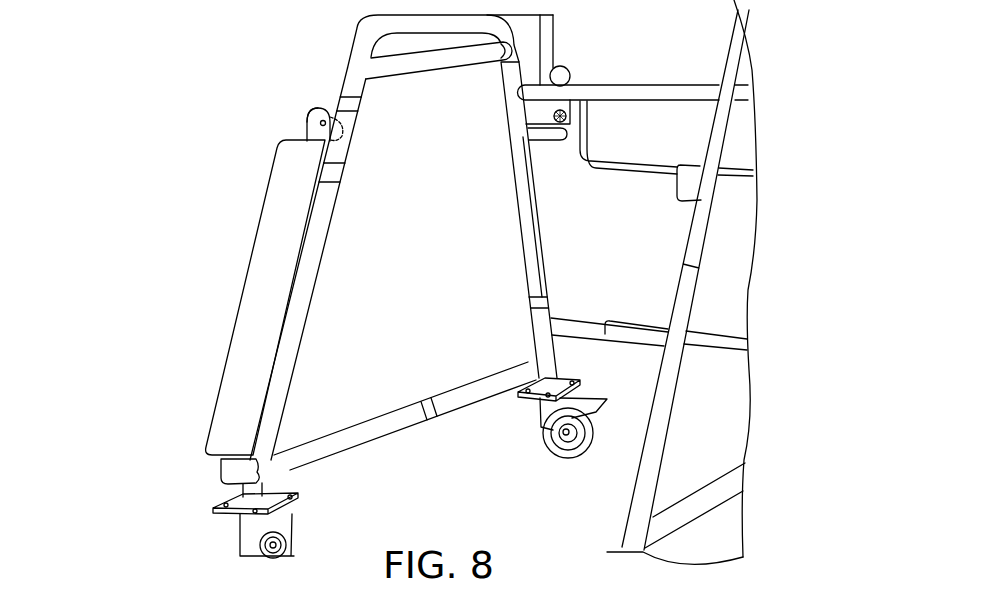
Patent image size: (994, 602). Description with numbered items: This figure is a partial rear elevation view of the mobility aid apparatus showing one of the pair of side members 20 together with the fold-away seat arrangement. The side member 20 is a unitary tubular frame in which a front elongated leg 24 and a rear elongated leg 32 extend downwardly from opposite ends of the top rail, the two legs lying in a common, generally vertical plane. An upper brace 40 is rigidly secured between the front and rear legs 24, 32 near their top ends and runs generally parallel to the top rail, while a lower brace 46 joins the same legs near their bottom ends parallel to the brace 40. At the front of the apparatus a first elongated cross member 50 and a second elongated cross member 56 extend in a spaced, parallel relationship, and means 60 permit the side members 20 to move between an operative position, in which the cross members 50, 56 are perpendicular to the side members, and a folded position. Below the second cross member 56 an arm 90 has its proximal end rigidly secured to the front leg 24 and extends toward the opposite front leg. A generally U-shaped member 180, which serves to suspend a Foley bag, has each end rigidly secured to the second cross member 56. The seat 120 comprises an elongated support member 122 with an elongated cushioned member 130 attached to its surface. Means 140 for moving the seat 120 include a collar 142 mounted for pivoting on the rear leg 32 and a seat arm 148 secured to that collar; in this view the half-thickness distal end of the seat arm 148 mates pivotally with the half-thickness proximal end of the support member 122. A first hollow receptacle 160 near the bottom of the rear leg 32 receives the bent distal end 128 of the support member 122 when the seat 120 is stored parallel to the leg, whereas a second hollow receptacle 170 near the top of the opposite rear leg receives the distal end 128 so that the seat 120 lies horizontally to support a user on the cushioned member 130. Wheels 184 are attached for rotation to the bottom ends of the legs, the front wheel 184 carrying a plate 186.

The side member 20 is at (349, 28).
The front elongated leg 24 is at (525, 217).
The rear elongated leg 32 is at (347, 171).
The brace 40 is at (443, 60).
The brace 46 is at (387, 423).
The first elongated cross member 50 is at (560, 323).
The second elongated cross member 56 is at (620, 88).
The means for moving the pair of side members 60 is at (574, 65).
The arm 90 is at (541, 141).
The seat 120 is at (235, 283).
The elongated support member 122 is at (354, 127).
The distal end 128 is at (230, 462).
The elongated cushioned member 130 is at (263, 267).
The means for moving the seat 140 is at (265, 110).
The collar 142 is at (353, 143).
The seat arm 148 is at (304, 126).
The first hollow receptacle 160 is at (263, 478).
The second hollow receptacle 170 is at (684, 179).
The U-shaped member 180 is at (606, 163).
The wheel 184 is at (560, 453).
The plate 186 is at (554, 411).